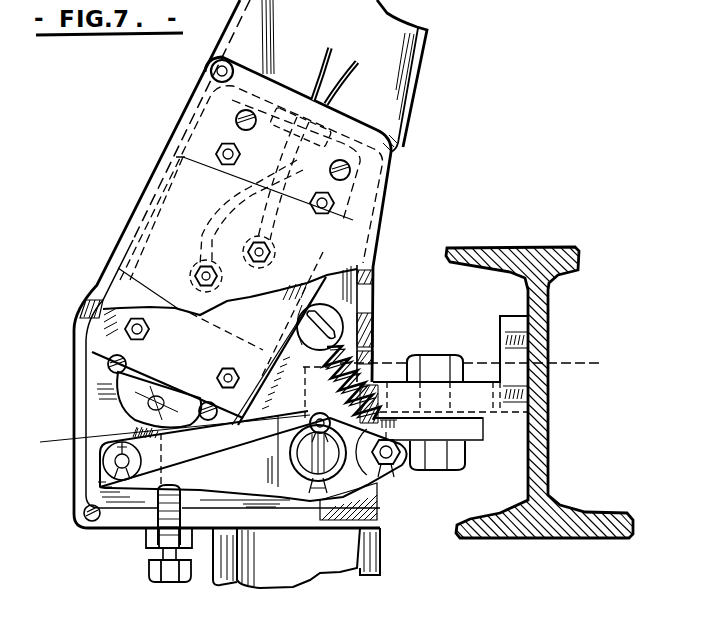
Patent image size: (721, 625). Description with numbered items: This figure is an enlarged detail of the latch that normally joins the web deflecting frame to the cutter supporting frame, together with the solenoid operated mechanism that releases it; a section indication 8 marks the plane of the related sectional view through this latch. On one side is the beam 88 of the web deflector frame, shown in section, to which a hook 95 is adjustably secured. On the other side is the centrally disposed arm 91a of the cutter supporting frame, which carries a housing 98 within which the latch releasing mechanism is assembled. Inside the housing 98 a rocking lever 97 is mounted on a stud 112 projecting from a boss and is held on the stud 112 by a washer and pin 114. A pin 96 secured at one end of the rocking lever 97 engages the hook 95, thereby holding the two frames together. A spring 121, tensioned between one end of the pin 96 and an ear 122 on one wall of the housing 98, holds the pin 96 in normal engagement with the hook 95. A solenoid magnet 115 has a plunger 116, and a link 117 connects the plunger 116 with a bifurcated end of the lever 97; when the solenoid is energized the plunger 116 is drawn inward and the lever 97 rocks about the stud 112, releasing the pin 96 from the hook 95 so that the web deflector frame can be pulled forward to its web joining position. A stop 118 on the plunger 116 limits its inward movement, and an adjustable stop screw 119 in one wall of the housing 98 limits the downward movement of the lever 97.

The centrally disposed arm 91a is at (426, 95).
The ear 122 is at (324, 320).
The rail bracket 8 is at (392, 341).
The solenoid magnet 115 is at (100, 307).
The plunger 116 is at (161, 374).
The stop 118 is at (112, 404).
The link 117 is at (112, 425).
The washer and pin 114 is at (306, 410).
The spring 121 is at (315, 370).
The rocking lever 97 is at (213, 485).
The adjustable stop screw 119 is at (188, 503).
The stud 112 is at (302, 474).
The pin 96 is at (396, 466).
The hook 95 is at (446, 454).
The beam 88 is at (556, 447).
The housing 98 is at (110, 541).